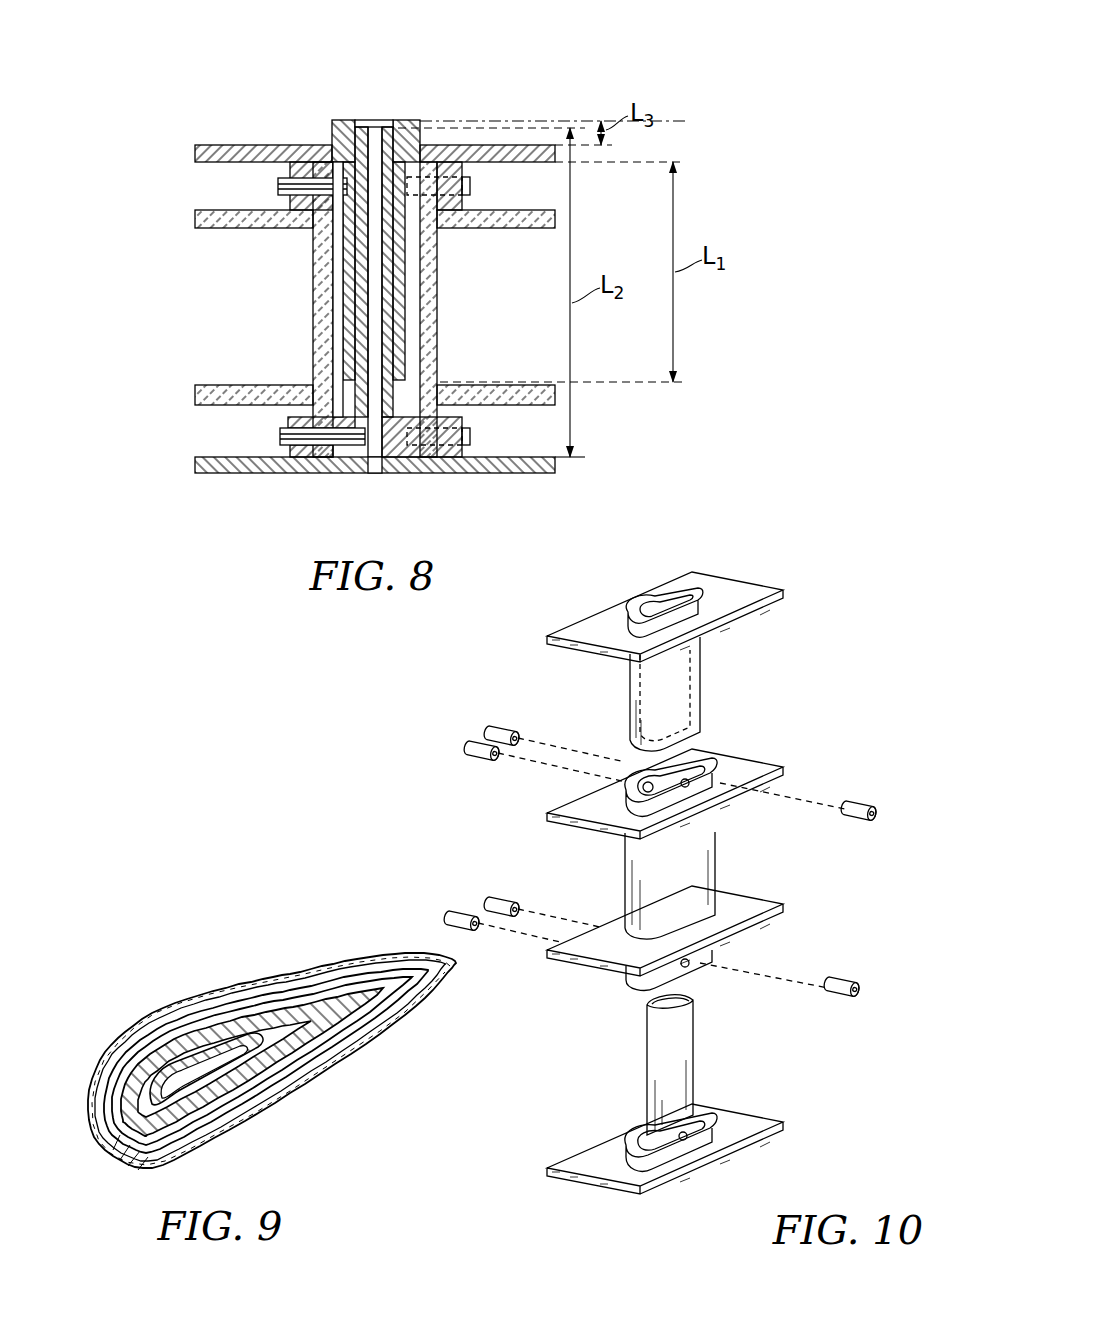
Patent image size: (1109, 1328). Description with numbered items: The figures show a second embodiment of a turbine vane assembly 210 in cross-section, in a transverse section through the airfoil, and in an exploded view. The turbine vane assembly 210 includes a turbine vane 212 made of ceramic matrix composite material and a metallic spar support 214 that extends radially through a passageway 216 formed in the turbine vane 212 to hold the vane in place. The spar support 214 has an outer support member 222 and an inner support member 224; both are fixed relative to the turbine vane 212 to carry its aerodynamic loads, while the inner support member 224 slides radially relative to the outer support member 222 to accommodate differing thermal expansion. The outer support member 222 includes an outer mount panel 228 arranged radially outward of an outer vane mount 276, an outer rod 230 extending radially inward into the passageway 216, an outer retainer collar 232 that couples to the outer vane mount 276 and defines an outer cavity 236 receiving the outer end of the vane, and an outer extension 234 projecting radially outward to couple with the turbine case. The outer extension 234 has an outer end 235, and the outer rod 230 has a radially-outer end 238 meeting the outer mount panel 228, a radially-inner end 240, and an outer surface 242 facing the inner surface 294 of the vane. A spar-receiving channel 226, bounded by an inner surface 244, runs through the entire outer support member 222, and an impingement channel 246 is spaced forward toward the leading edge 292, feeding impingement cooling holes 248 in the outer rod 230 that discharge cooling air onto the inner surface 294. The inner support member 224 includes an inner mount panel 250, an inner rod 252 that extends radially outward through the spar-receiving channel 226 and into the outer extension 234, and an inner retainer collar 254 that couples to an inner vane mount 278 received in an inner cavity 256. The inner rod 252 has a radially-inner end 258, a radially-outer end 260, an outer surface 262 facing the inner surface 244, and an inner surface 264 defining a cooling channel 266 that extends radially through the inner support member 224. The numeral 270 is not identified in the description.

In FIG. 8, the turbine vane assembly 210 is at (150, 102).
In FIG. 9, the turbine vane assembly 210 is at (131, 908).
In FIG. 10, the turbine vane assembly 210 is at (831, 514).
In FIG. 8, the turbine vane 212 is at (265, 318).
In FIG. 10, the turbine vane 212 is at (848, 841).
In FIG. 8, the spar support 214 is at (118, 152).
In FIG. 10, the spar support 214 is at (847, 591).
In FIG. 9, the passageway 216 is at (404, 978).
In FIG. 10, the passageway 216 is at (650, 772).
In FIG. 8, the outer support member 222 is at (190, 152).
In FIG. 10, the outer support member 222 is at (783, 611).
In FIG. 8, the inner support member 224 is at (190, 437).
In FIG. 10, the inner support member 224 is at (773, 1148).
In FIG. 8, the spar-receiving channel 226 is at (346, 118).
In FIG. 9, the spar-receiving channel 226 is at (143, 1062).
In FIG. 10, the spar-receiving channel 226 is at (681, 687).
In FIG. 8, the outer mount panel 228 is at (242, 145).
In FIG. 10, the outer mount panel 228 is at (748, 585).
In FIG. 8, the outer rod 230 is at (330, 295).
In FIG. 9, the outer rod 230 is at (216, 1133).
In FIG. 10, the outer rod 230 is at (627, 667).
In FIG. 8, the outer retainer collar 232 is at (285, 177).
In FIG. 8, the outer extension 234 is at (332, 125).
In FIG. 10, the outer extension 234 is at (626, 608).
In FIG. 8, the outer end 235 is at (400, 122).
In FIG. 8, the outer cavity 236 is at (322, 165).
In FIG. 8, the radially-outer end 238 is at (418, 140).
In FIG. 8, the radially-inner end 240 is at (400, 120).
In FIG. 9, the outer surface 242 is at (192, 1068).
In FIG. 9, the inner surface 244 is at (278, 1025).
In FIG. 9, the impingement channel 246 is at (102, 1112).
In FIG. 10, the impingement channel 246 is at (625, 680).
In FIG. 9, the impingement cooling holes 248 is at (135, 1164).
In FIG. 8, the inner mount panel 250 is at (240, 473).
In FIG. 10, the inner mount panel 250 is at (567, 1178).
In FIG. 8, the inner rod 252 is at (396, 318).
In FIG. 9, the inner rod 252 is at (260, 1076).
In FIG. 10, the inner rod 252 is at (645, 1052).
In FIG. 8, the inner retainer collar 254 is at (462, 428).
In FIG. 10, the inner retainer collar 254 is at (721, 1113).
In FIG. 8, the inner cavity 256 is at (427, 459).
In FIG. 10, the inner cavity 256 is at (632, 1122).
In FIG. 8, the radially-inner end 258 is at (395, 462).
In FIG. 8, the radially-outer end 260 is at (376, 125).
In FIG. 9, the outer surface 262 is at (253, 1063).
In FIG. 9, the inner surface 264 is at (248, 1048).
In FIG. 8, the cooling channel 266 is at (373, 459).
In FIG. 9, the cooling channel 266 is at (245, 998).
In FIG. 9, the airfoil shell 270 is at (349, 958).
In FIG. 8, the outer vane mount 276 is at (455, 165).
In FIG. 10, the outer vane mount 276 is at (720, 750).
In FIG. 8, the inner vane mount 278 is at (450, 447).
In FIG. 10, the inner vane mount 278 is at (690, 970).
In FIG. 9, the leading edge 292 is at (104, 1138).
In FIG. 10, the leading edge 292 is at (625, 885).
In FIG. 9, the inner surface 294 is at (94, 1098).